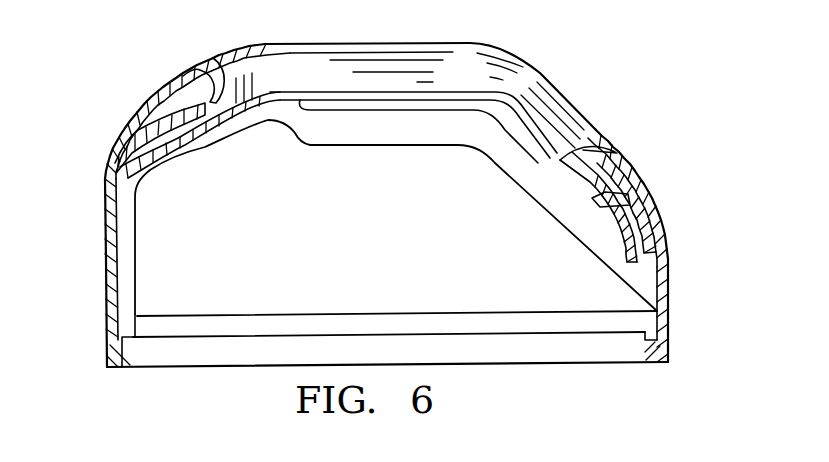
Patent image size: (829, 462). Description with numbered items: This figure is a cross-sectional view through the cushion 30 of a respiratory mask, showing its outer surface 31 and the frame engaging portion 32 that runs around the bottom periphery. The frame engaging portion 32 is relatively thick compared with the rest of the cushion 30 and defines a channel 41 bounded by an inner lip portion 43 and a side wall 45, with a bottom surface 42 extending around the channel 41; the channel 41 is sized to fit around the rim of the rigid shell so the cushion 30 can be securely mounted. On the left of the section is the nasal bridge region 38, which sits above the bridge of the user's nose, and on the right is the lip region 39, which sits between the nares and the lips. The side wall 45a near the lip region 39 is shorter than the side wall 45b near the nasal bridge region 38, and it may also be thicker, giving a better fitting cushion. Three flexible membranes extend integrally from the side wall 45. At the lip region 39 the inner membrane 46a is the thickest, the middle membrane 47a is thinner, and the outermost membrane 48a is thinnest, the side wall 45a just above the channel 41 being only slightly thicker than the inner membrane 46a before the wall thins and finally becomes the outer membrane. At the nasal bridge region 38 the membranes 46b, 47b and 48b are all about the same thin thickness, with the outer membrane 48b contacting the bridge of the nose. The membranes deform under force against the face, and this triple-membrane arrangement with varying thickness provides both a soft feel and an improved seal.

The cushion 30 is at (626, 93).
The outer surface 31 is at (559, 63).
The frame engaging portion 32 is at (92, 353).
The nasal bridge region 38 is at (202, 56).
The lip region 39 is at (602, 130).
The channel 41 is at (657, 332).
The bottom surface 42 is at (658, 378).
The inner lip portion 43 is at (126, 334).
The side wall 45 is at (96, 220).
The side wall near the lip region 45a is at (665, 288).
The side wall near the nasal bridge region 45b is at (107, 278).
The inner membrane at the lip region 46a is at (627, 255).
The inner membrane at the nasal bridge region 46b is at (165, 152).
The middle membrane at the lip region 47a is at (650, 183).
The middle membrane at the nasal bridge region 47b is at (130, 115).
The outermost membrane at the lip region 48a is at (642, 166).
The outer membrane at the nasal bridge region 48b is at (137, 104).